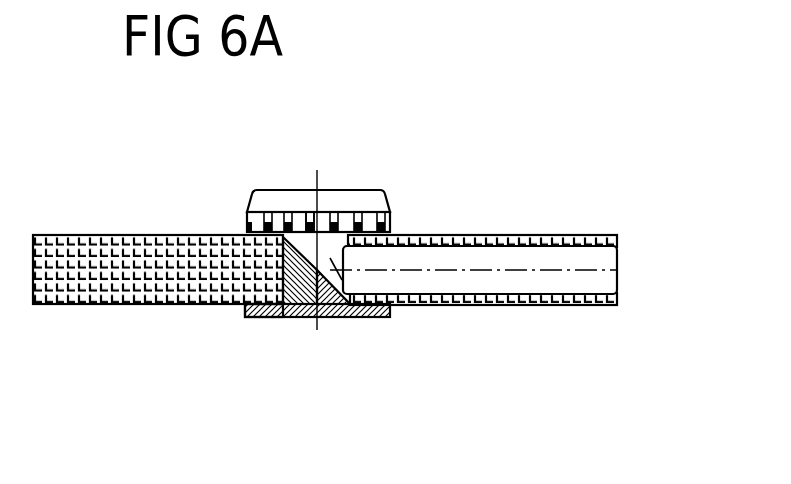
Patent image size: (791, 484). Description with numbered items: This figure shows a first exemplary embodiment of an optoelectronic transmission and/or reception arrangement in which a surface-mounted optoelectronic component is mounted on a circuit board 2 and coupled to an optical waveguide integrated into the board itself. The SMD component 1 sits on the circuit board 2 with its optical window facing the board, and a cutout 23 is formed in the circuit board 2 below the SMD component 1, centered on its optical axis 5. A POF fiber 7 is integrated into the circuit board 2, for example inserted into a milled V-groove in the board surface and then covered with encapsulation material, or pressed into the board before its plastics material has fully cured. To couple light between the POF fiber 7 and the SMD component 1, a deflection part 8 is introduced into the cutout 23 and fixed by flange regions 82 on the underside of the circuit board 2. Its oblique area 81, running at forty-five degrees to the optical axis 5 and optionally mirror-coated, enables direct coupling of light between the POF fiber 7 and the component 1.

The SMD component 1 is at (370, 198).
The circuit board 2 is at (115, 233).
The optical axis 5 is at (316, 182).
The POF fiber 7 is at (608, 259).
The deflection part 8 is at (330, 318).
The cutout 23 is at (352, 316).
The oblique area 81 is at (306, 258).
The flange regions 82 is at (262, 318).